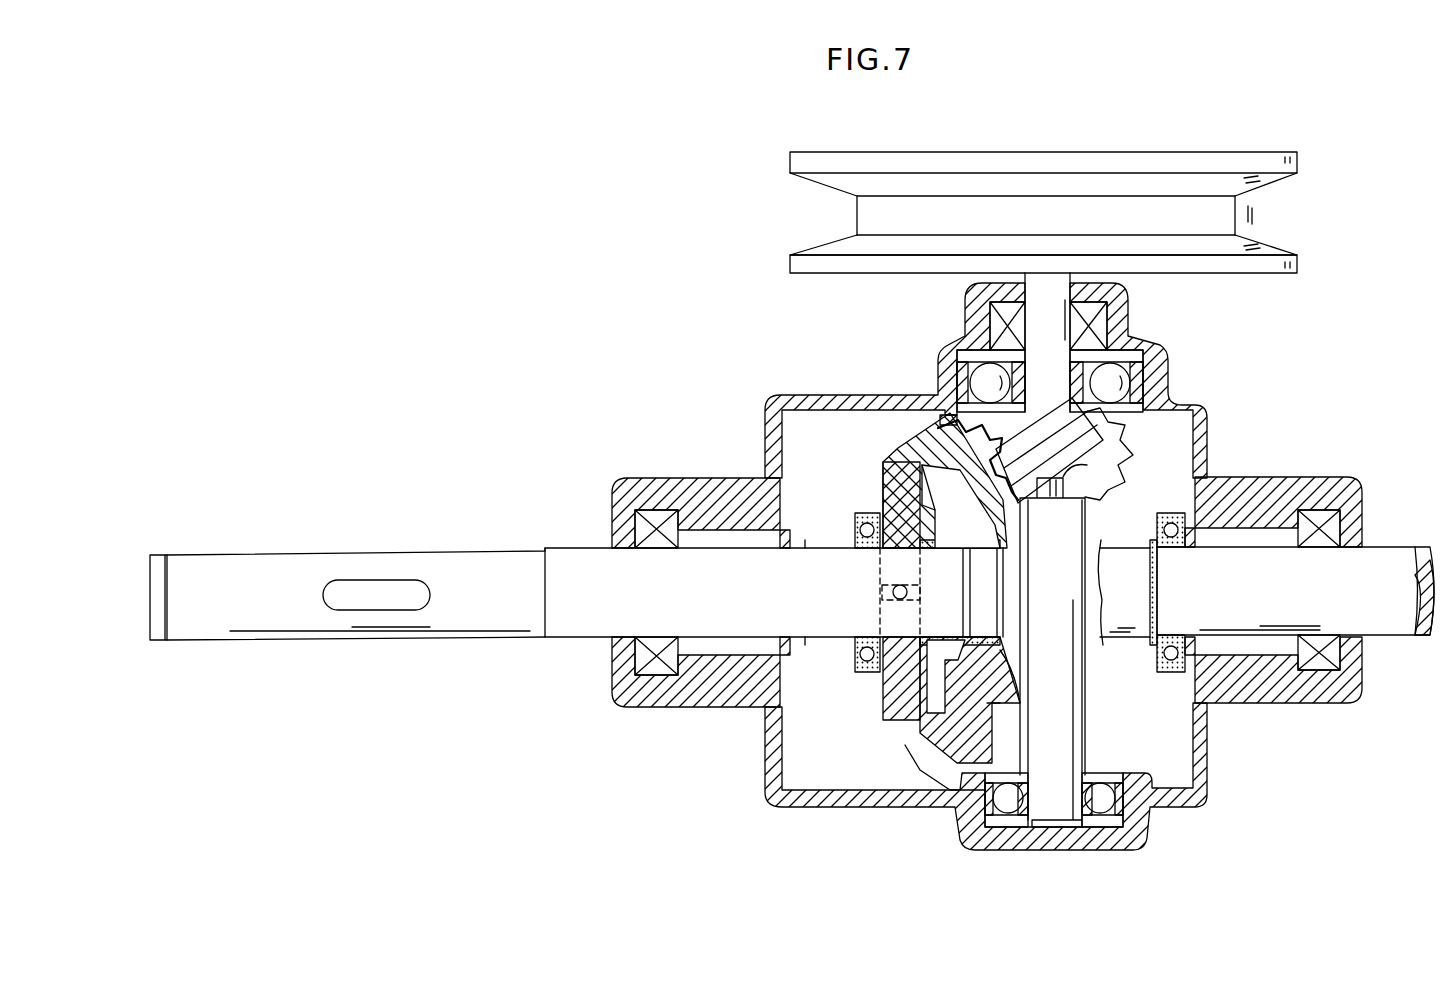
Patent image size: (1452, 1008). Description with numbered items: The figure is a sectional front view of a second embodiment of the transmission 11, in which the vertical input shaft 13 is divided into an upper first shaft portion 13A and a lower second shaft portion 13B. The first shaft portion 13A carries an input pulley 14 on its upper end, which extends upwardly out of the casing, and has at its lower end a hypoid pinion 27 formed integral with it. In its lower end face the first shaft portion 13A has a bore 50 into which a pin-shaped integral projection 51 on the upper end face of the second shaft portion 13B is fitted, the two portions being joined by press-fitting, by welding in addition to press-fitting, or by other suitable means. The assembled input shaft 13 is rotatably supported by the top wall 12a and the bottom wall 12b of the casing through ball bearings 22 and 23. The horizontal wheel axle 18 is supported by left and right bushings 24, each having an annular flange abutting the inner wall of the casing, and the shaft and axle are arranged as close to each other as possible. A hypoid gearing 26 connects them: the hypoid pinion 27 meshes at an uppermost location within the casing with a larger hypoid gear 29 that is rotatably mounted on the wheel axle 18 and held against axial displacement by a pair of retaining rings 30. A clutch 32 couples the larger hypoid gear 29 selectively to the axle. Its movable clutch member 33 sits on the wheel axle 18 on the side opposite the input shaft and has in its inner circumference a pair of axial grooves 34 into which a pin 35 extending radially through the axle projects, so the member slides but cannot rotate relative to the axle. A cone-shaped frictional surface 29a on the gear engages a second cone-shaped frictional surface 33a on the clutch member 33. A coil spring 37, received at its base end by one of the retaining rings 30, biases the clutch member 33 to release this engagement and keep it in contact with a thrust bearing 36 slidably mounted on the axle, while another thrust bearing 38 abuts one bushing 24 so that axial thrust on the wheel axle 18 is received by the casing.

The input pulley 14 is at (790, 160).
The transmission 11 is at (745, 358).
The top wall 12a is at (950, 392).
The bottom wall 12b is at (1150, 815).
The input shaft 13 is at (1102, 528).
The first shaft portion 13A is at (1050, 322).
The second shaft portion 13B is at (1085, 712).
The wheel axle 18 is at (1258, 608).
The ball bearing 22 is at (1100, 382).
The ball bearing 23 is at (1085, 835).
The bushing 24 is at (728, 522).
The hypoid gearing 26 is at (955, 405).
The hypoid pinion 27 is at (1117, 432).
The larger hypoid gear 29 is at (940, 790).
The cone-shaped frictional surface 29a is at (895, 468).
The retaining ring 30 is at (1000, 682).
The clutch 32 is at (848, 758).
The movable clutch member 33 is at (883, 700).
The second cone-shaped frictional surface 33a is at (930, 740).
The axial groove 34 is at (880, 598).
The pin 35 is at (888, 590).
The thrust bearing 36 is at (855, 530).
The coil spring 37 is at (945, 560).
The thrust bearing 38 is at (1175, 638).
The bore 50 is at (1045, 500).
The projection 51 is at (1115, 462).